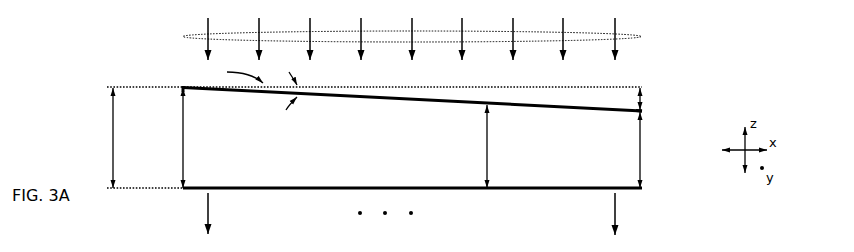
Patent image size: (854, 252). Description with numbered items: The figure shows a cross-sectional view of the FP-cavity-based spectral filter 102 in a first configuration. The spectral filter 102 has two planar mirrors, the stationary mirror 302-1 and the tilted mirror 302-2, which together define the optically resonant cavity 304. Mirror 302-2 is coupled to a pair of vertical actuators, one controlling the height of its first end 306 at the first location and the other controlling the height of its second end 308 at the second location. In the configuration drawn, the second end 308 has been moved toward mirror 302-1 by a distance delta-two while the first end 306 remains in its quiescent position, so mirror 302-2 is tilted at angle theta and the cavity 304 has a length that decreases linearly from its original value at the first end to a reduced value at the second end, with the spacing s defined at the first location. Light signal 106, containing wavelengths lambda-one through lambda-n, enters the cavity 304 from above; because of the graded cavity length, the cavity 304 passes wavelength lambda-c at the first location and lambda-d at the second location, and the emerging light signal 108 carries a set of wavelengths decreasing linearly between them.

The spectral filter 102 is at (77, 45).
The light signal 106 is at (640, 35).
The light signal 108 is at (657, 226).
The mirror 302-1 is at (387, 187).
The mirror 302-2 is at (387, 99).
The optically resonant cavity 304 is at (453, 159).
The first end 306 is at (175, 92).
The second end 308 is at (649, 119).